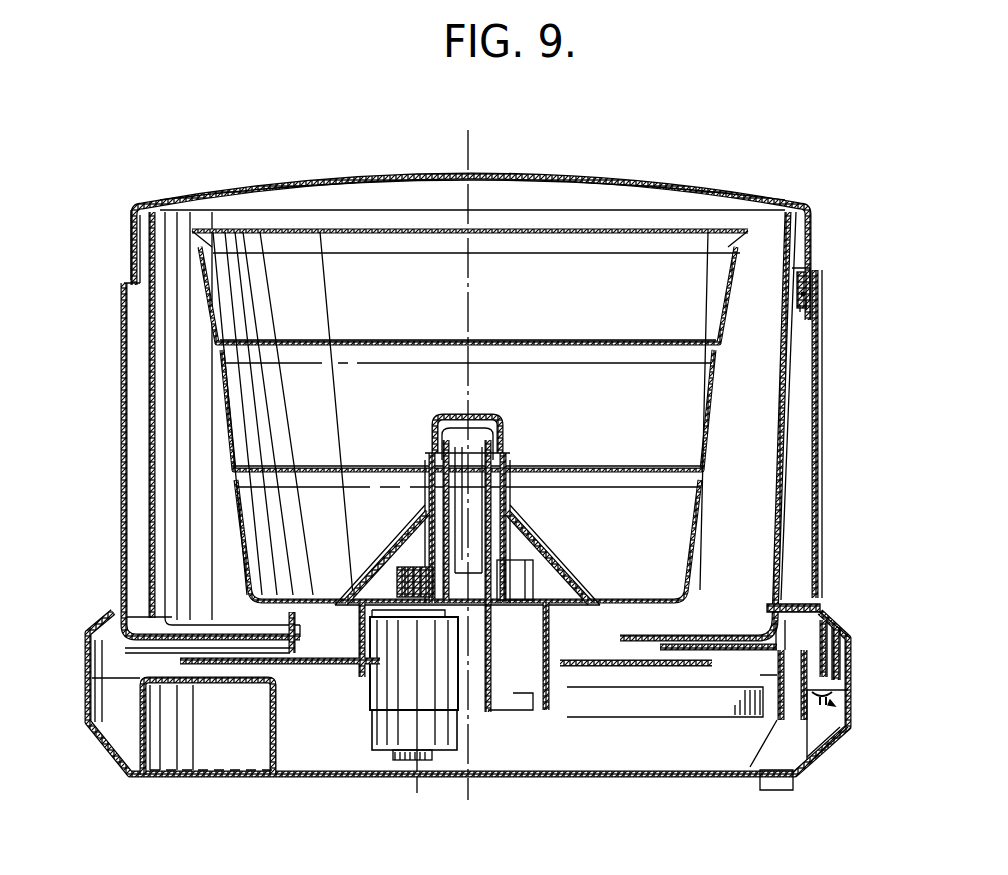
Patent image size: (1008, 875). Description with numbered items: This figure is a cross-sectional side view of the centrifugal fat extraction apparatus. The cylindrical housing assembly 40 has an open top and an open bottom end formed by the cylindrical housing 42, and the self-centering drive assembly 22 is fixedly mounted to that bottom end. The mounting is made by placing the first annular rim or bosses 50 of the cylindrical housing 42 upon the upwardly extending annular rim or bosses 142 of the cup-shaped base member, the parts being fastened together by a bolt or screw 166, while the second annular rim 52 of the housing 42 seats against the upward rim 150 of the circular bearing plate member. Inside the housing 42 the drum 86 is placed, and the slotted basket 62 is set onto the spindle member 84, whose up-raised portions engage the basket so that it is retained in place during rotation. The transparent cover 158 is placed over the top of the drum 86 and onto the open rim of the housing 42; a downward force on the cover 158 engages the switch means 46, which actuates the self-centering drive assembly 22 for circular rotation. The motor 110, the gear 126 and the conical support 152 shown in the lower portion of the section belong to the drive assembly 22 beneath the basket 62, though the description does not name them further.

The self-centering drive assembly 22 is at (108, 759).
The housing assembly 40 is at (832, 406).
The cylindrical housing 42 is at (818, 373).
The switch means 46 is at (806, 296).
The first annular rim 50 is at (850, 651).
The second annular rim 52 is at (802, 612).
The slotted basket 62 is at (730, 323).
The spindle member 84 is at (500, 541).
The drum 86 is at (152, 548).
The motor 110 is at (395, 692).
The gear 126 is at (380, 562).
The upwardly extending annular rim 142 is at (848, 697).
The upward rim 150 is at (827, 615).
The conical support 152 is at (375, 581).
The transparent cover 158 is at (668, 178).
The bolt or screw 166 is at (850, 727).